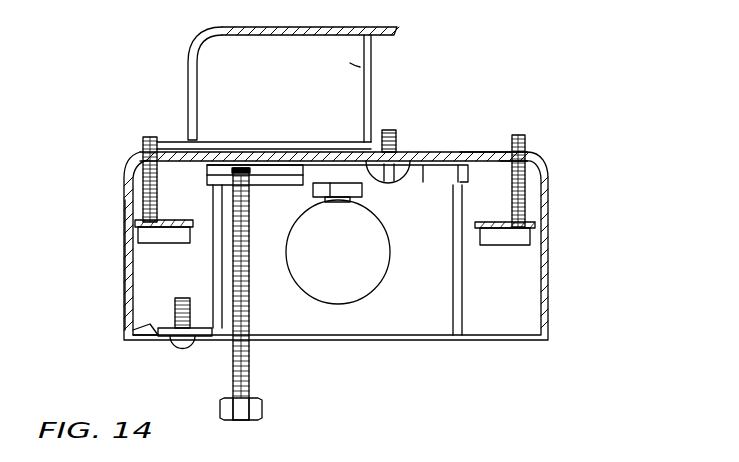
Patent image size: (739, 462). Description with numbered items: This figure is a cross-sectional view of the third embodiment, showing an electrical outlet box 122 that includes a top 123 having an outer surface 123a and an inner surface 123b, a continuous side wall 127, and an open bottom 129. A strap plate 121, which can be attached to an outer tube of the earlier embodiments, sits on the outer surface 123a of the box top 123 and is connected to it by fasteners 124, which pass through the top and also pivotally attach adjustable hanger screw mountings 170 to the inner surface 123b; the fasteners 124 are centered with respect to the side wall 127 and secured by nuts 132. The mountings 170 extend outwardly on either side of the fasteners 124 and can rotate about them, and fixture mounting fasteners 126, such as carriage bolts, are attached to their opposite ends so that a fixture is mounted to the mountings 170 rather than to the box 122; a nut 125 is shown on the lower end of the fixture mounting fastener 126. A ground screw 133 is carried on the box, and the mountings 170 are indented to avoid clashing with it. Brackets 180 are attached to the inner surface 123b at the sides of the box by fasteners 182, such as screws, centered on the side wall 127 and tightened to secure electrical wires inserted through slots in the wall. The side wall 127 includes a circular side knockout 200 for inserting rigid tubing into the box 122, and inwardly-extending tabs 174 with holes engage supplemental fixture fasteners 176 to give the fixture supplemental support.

The strap plate 121 is at (368, 75).
The electrical outlet box 122 is at (558, 298).
The box top 123 is at (455, 150).
The outer surface 123a is at (494, 150).
The inner surface 123b is at (497, 167).
The fasteners 124 is at (332, 200).
The nut 125 is at (256, 410).
The fixture mounting fasteners 126 is at (240, 362).
The side wall 127 is at (125, 300).
The open bottom 129 is at (423, 346).
The nuts 132 is at (320, 187).
The ground screw 133 is at (397, 143).
The adjustable hanger screw mountings 170 is at (434, 186).
The inwardly-extending tabs 174 is at (158, 338).
The supplemental fixture fasteners 176 is at (186, 338).
The brackets 180 is at (140, 237).
The fasteners 182 is at (148, 140).
The side knockout 200 is at (330, 292).